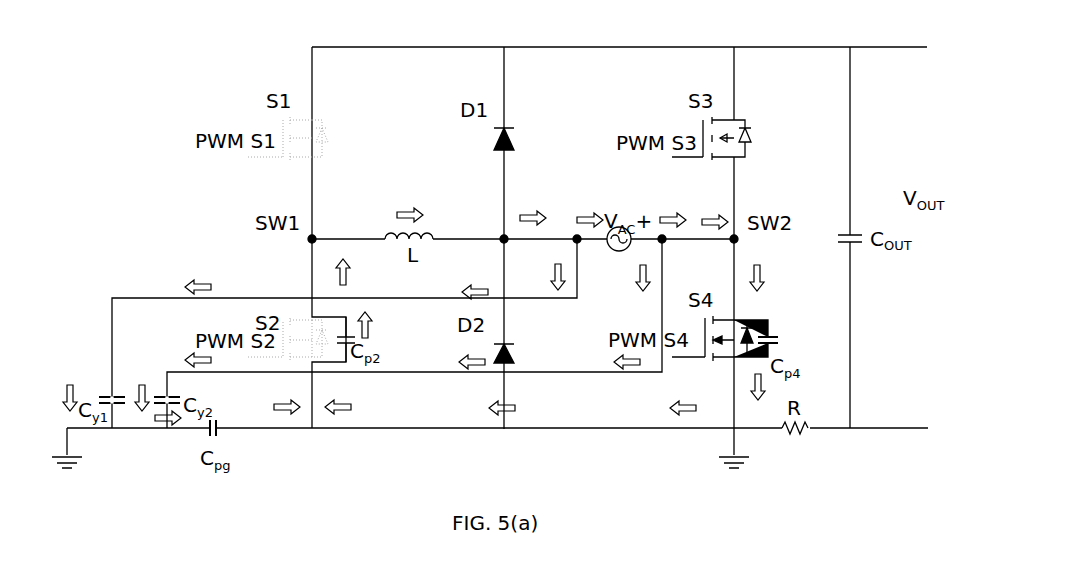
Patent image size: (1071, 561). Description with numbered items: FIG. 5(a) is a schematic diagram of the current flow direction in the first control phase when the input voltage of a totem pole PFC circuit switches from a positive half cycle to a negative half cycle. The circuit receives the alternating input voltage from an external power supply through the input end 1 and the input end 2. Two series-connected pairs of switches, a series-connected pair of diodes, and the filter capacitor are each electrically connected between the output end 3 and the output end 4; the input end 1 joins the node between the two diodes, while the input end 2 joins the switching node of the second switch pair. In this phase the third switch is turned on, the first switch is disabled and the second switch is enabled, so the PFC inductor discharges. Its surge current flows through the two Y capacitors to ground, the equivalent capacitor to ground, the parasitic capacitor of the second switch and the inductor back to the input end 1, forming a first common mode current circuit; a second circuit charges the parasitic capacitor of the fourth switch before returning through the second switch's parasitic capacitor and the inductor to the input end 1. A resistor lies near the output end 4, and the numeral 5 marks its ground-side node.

The input end 1 is at (357, 331).
The input end 2 is at (416, 331).
The output end 3 is at (619, 33).
The output end 4 is at (894, 440).
The sense node between resistor R and ground 5 is at (771, 412).